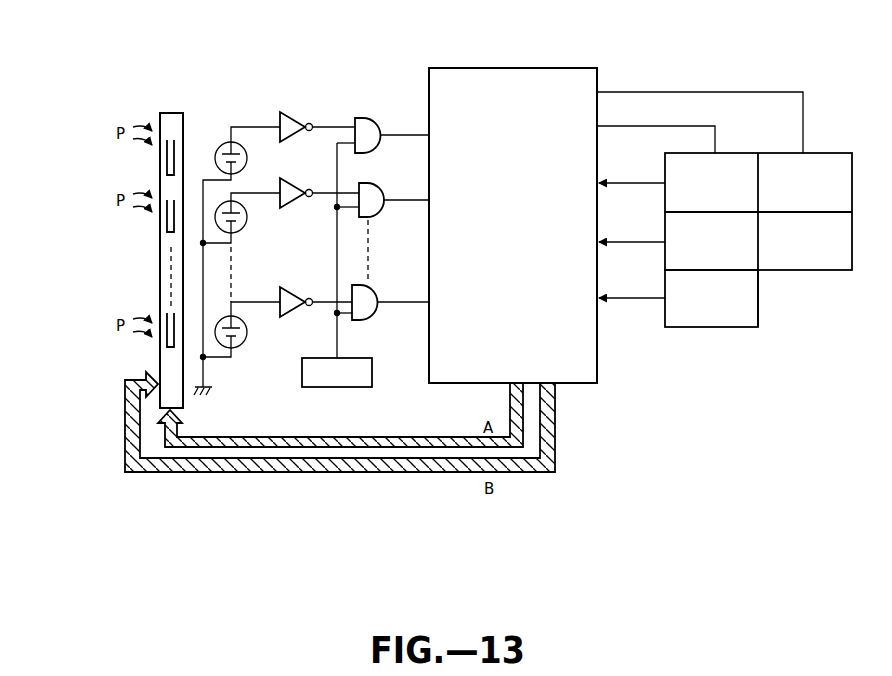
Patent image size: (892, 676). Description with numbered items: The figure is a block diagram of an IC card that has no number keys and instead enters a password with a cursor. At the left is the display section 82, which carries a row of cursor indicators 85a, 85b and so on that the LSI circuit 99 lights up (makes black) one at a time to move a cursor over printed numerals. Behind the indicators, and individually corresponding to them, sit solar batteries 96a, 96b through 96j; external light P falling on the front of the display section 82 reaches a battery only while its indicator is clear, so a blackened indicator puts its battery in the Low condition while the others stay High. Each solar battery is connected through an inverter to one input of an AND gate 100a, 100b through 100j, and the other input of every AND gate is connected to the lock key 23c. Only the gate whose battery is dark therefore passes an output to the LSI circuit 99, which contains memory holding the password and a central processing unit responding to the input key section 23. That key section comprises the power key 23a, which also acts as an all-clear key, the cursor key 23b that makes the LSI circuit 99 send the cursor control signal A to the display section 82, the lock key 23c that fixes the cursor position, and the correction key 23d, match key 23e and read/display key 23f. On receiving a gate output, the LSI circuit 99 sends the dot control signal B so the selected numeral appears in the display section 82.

The display section 82 is at (172, 113).
The cursor indicator 85a is at (178, 148).
The cursor indicator 85b is at (178, 203).
The solar battery 96a is at (247, 150).
The solar battery 96b is at (247, 212).
The solar battery 96j is at (247, 340).
The AND gate 100a is at (367, 128).
The AND gate 100b is at (373, 198).
The AND gate 100j is at (367, 300).
The LSI circuit 99 is at (563, 68).
The input key section 23 is at (735, 234).
The power key 23a is at (715, 317).
The cursor key 23b is at (673, 197).
The lock key 23c is at (372, 382).
The correction key 23d is at (810, 160).
The match key 23e is at (675, 257).
The read/display key 23f is at (807, 262).